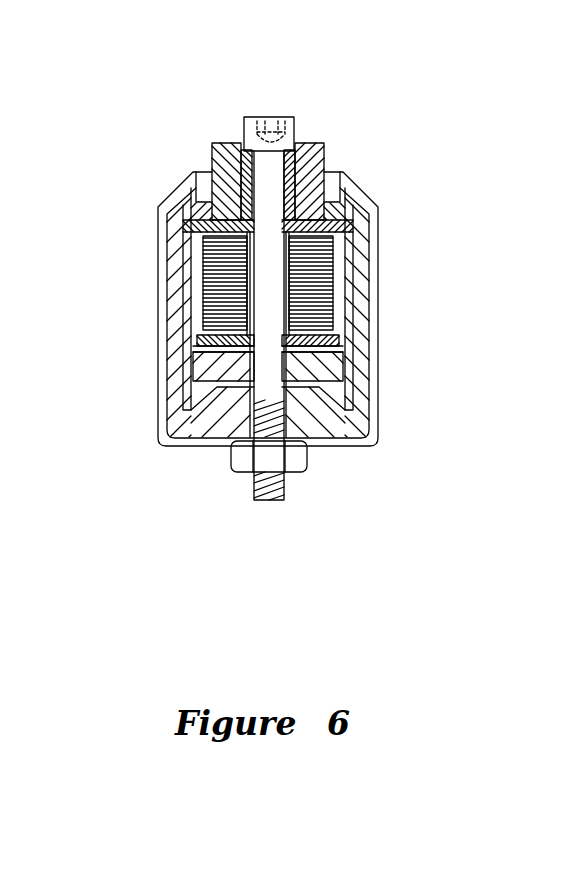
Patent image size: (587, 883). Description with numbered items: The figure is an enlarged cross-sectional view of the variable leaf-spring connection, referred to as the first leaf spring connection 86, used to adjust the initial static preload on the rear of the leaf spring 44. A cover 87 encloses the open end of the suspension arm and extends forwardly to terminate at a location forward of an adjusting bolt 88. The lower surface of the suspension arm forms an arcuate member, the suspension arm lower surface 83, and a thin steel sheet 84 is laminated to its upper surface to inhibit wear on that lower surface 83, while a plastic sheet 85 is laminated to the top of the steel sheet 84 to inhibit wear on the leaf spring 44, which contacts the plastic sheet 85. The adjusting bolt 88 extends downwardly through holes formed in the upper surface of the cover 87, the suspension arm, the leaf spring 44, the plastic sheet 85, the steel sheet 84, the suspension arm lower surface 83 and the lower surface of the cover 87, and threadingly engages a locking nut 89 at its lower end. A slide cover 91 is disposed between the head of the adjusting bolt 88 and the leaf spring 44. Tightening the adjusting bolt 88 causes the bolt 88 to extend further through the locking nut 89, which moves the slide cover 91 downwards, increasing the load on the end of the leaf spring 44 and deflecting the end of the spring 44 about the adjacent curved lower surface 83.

The first leaf spring connection 86 is at (190, 83).
The cover 87 is at (378, 234).
The adjusting bolt 88 is at (297, 117).
The locking nut 89 is at (308, 461).
The slide cover 91 is at (348, 172).
The leaf spring 44 is at (204, 285).
The plastic sheet 85 is at (343, 336).
The steel sheet 84 is at (338, 390).
The suspension arm lower surface 83 is at (347, 410).